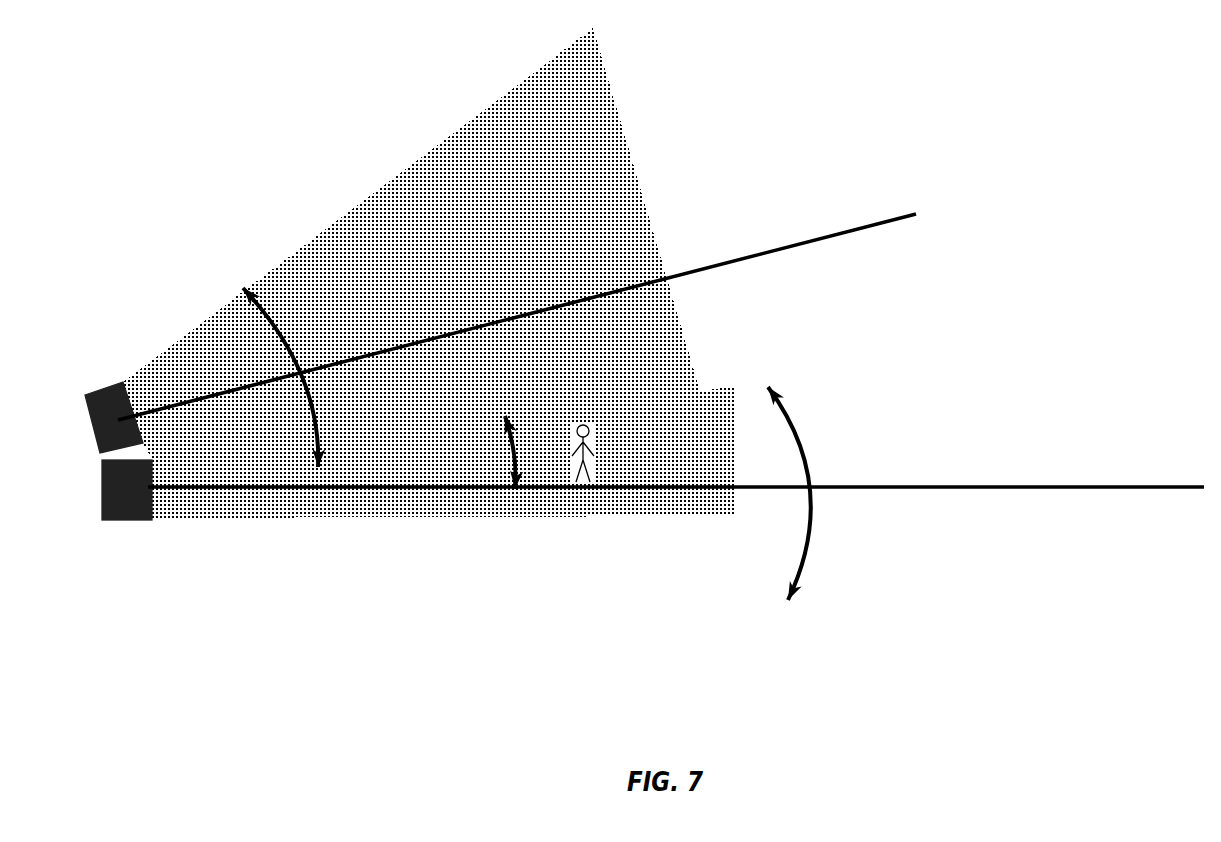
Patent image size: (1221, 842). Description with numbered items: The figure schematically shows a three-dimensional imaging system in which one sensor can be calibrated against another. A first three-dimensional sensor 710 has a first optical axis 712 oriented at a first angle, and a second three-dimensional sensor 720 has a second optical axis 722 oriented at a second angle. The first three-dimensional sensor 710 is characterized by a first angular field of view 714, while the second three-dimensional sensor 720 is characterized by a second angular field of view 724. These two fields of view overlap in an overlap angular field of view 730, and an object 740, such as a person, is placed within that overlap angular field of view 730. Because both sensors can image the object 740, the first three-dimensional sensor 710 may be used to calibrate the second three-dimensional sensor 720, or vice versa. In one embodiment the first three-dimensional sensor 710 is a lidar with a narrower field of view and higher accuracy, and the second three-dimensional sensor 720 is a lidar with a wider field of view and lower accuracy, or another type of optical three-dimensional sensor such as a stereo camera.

The first three-dimensional sensor 710 is at (133, 522).
The first optical axis 712 is at (1144, 487).
The first angular field of view 714 is at (815, 545).
The second three-dimensional sensor 720 is at (106, 388).
The second optical axis 722 is at (799, 248).
The second angular field of view 724 is at (286, 337).
The overlap angular field of view 730 is at (505, 447).
The object 740 is at (597, 462).